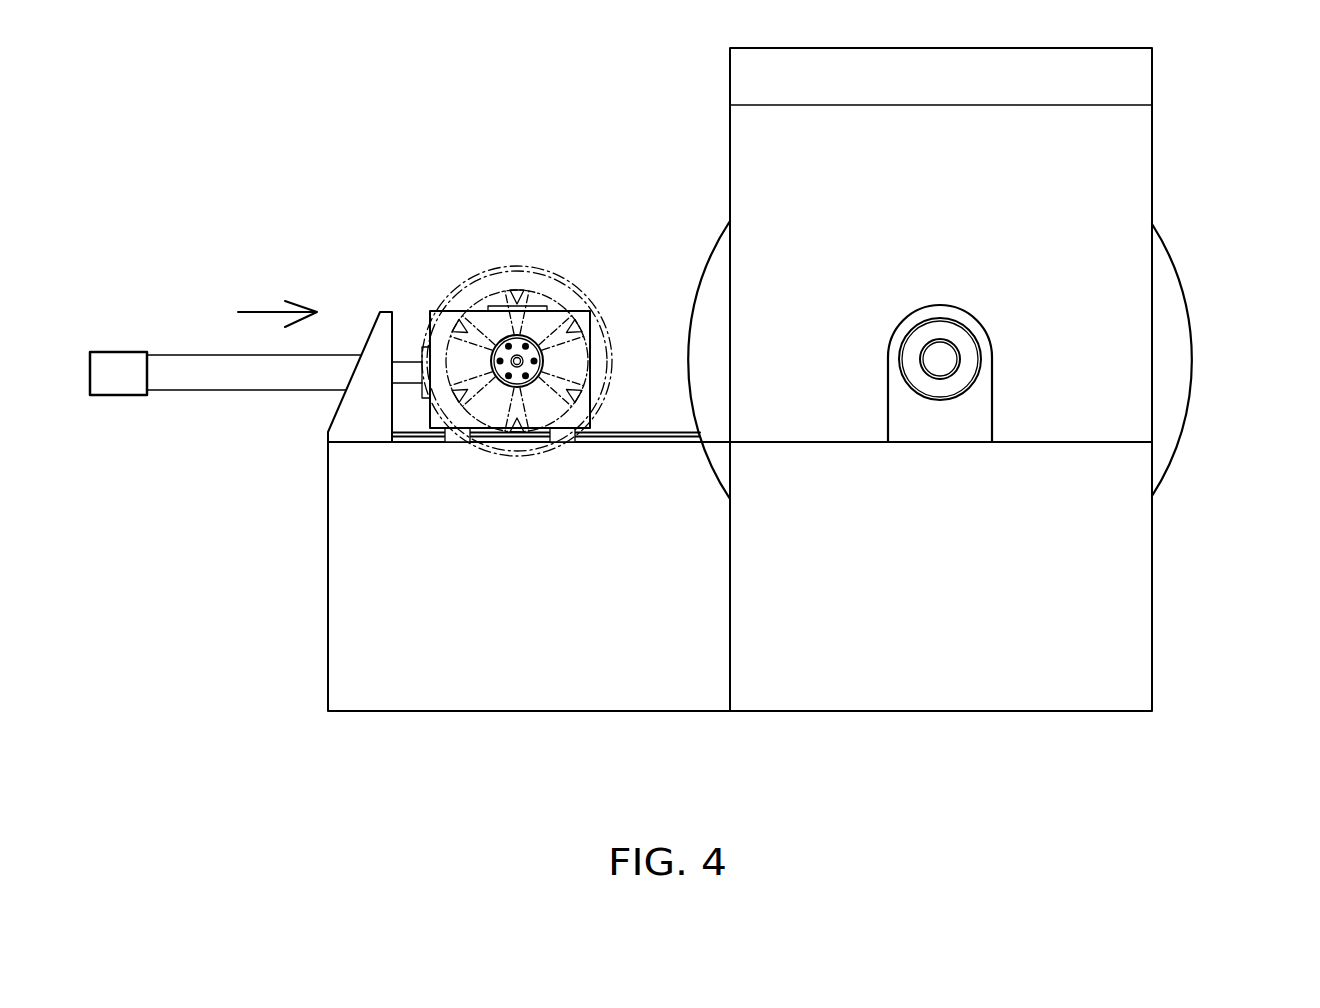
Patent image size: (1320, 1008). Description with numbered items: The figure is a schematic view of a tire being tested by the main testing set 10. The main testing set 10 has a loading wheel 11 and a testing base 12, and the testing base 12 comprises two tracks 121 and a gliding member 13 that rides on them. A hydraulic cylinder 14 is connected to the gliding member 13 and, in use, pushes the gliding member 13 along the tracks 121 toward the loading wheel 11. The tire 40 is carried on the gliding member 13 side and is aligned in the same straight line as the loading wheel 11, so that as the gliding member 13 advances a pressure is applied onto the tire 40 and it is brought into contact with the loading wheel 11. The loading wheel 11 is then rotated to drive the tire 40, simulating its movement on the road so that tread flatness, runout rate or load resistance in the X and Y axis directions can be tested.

The main testing set 10 is at (1198, 167).
The loading wheel 11 is at (715, 273).
The testing base 12 is at (357, 510).
The tracks 121 is at (640, 432).
The gliding member 13 is at (464, 357).
The hydraulic cylinder 14 is at (197, 368).
The tire 40 is at (517, 273).